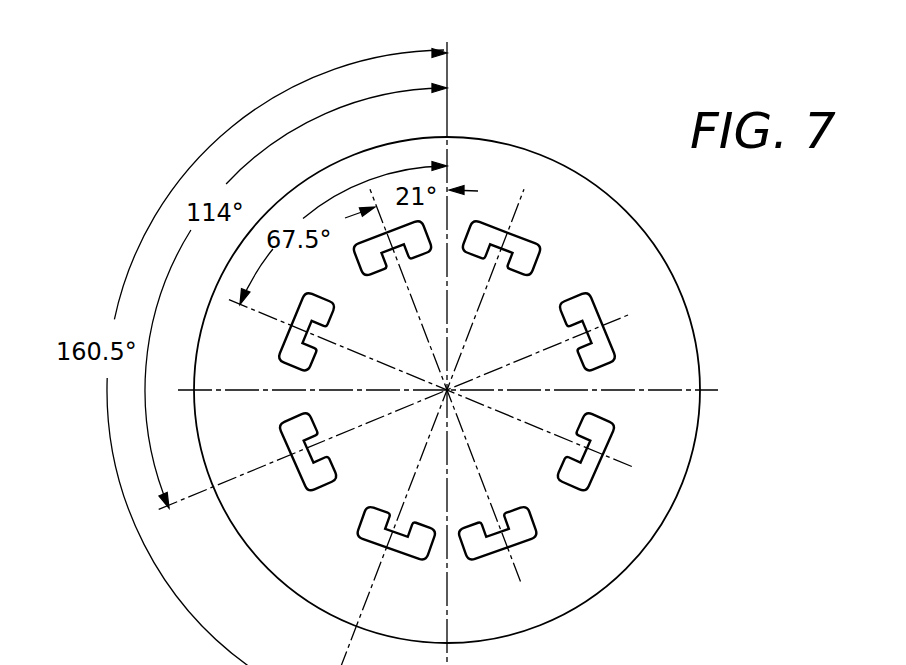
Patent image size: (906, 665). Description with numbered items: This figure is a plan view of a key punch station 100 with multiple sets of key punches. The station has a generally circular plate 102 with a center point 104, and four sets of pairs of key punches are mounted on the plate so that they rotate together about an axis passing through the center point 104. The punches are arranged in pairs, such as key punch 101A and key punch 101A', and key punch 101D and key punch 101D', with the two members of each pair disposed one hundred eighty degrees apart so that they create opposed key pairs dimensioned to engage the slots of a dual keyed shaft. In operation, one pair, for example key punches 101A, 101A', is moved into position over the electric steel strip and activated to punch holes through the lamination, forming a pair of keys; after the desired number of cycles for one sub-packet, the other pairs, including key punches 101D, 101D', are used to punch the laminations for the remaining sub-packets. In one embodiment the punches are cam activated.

The key punch station 100 is at (455, 353).
The circular plate 102 is at (652, 261).
The center point 104 is at (448, 390).
The key punch 101A is at (385, 271).
The key punch 101D is at (512, 227).
The key punch 101A' is at (497, 560).
The key punch 101D' is at (343, 533).